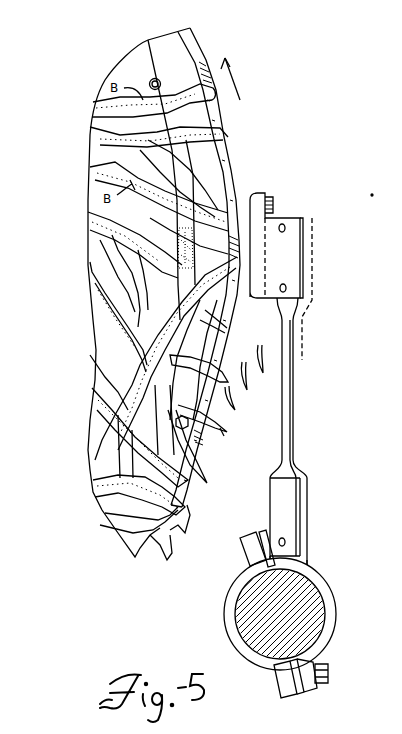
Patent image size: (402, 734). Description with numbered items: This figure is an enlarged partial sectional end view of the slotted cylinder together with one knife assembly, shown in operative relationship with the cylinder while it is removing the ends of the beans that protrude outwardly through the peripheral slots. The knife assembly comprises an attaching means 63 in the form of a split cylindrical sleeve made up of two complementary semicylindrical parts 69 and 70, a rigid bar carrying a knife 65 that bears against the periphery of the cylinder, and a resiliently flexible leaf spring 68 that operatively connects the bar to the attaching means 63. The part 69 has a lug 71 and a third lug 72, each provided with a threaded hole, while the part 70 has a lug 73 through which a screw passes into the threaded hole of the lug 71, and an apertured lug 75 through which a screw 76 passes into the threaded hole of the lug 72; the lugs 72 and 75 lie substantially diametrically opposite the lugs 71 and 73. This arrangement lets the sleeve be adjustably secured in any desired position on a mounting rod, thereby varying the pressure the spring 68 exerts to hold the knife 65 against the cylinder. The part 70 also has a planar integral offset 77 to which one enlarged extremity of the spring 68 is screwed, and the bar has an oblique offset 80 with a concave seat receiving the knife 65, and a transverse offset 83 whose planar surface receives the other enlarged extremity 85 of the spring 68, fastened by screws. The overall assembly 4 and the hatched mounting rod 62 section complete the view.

The holder arm 4 is at (307, 434).
The shaft 62 is at (243, 608).
The attaching means 63 is at (333, 582).
The knife 65 is at (242, 165).
The leaf spring 68 is at (288, 398).
The semicylindrical part 69 is at (233, 585).
The semicylindrical part 70 is at (335, 628).
The lug 71 is at (247, 537).
The lug 72 is at (281, 696).
The lug 73 is at (267, 530).
The apertured lug 75 is at (317, 688).
The screw 76 is at (328, 674).
The planar integral offset 77 is at (272, 483).
The integral offset 80 is at (270, 230).
The transverse integral offset 83 is at (283, 247).
The enlarged extremity 85 is at (305, 265).